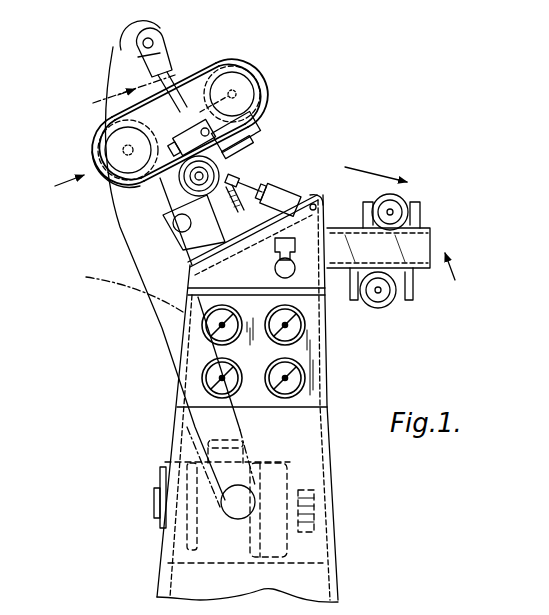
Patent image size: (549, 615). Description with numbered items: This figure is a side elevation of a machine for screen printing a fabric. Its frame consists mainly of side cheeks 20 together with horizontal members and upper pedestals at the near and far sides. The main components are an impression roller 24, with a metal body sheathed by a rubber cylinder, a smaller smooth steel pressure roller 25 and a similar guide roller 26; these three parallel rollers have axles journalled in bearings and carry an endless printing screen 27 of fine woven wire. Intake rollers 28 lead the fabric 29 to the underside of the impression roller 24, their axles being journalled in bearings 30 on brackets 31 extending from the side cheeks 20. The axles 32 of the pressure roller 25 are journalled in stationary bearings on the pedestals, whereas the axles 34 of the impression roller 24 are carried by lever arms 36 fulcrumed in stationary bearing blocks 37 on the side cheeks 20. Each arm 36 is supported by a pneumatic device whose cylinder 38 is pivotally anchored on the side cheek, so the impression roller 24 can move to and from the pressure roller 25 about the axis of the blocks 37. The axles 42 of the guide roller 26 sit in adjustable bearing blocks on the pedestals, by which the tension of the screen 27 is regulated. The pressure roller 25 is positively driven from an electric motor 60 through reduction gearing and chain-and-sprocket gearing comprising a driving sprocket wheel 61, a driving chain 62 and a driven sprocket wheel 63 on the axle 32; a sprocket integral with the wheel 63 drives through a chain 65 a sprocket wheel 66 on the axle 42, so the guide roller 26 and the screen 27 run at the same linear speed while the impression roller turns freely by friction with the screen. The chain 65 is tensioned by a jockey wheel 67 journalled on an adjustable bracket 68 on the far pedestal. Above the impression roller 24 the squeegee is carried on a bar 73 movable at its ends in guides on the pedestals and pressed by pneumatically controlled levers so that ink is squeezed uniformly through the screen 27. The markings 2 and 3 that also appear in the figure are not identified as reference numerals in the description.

The belt grinding machine 2 is at (58, 187).
The viewing direction arrow 3 is at (159, 264).
The side cheeks 20 is at (190, 272).
The impression roller 24 is at (170, 218).
The pressure roller 25 is at (125, 150).
The guide roller 26 is at (262, 84).
The endless printing screen 27 is at (252, 131).
The intake rollers 28 is at (395, 195).
The fabric 29 is at (345, 167).
The bearings 30 is at (416, 200).
The brackets 31 is at (430, 236).
The axles of the pressure roller 32 is at (140, 130).
The axles of the impression roller 34 is at (205, 175).
The lever arms 36 is at (177, 213).
The stationary bearing blocks 37 is at (187, 242).
The cylinder 38 is at (272, 182).
The axles of the guide roller 42 is at (265, 114).
The electric motor 60 is at (160, 470).
The driving sprocket wheel 61 is at (233, 493).
The driving chain 62 is at (121, 289).
The driven sprocket wheel 63 is at (108, 165).
The chain 65 is at (195, 64).
The sprocket wheel 66 is at (258, 99).
The jockey wheel 67 is at (170, 46).
The bracket 68 is at (252, 70).
The bar 73 is at (180, 120).